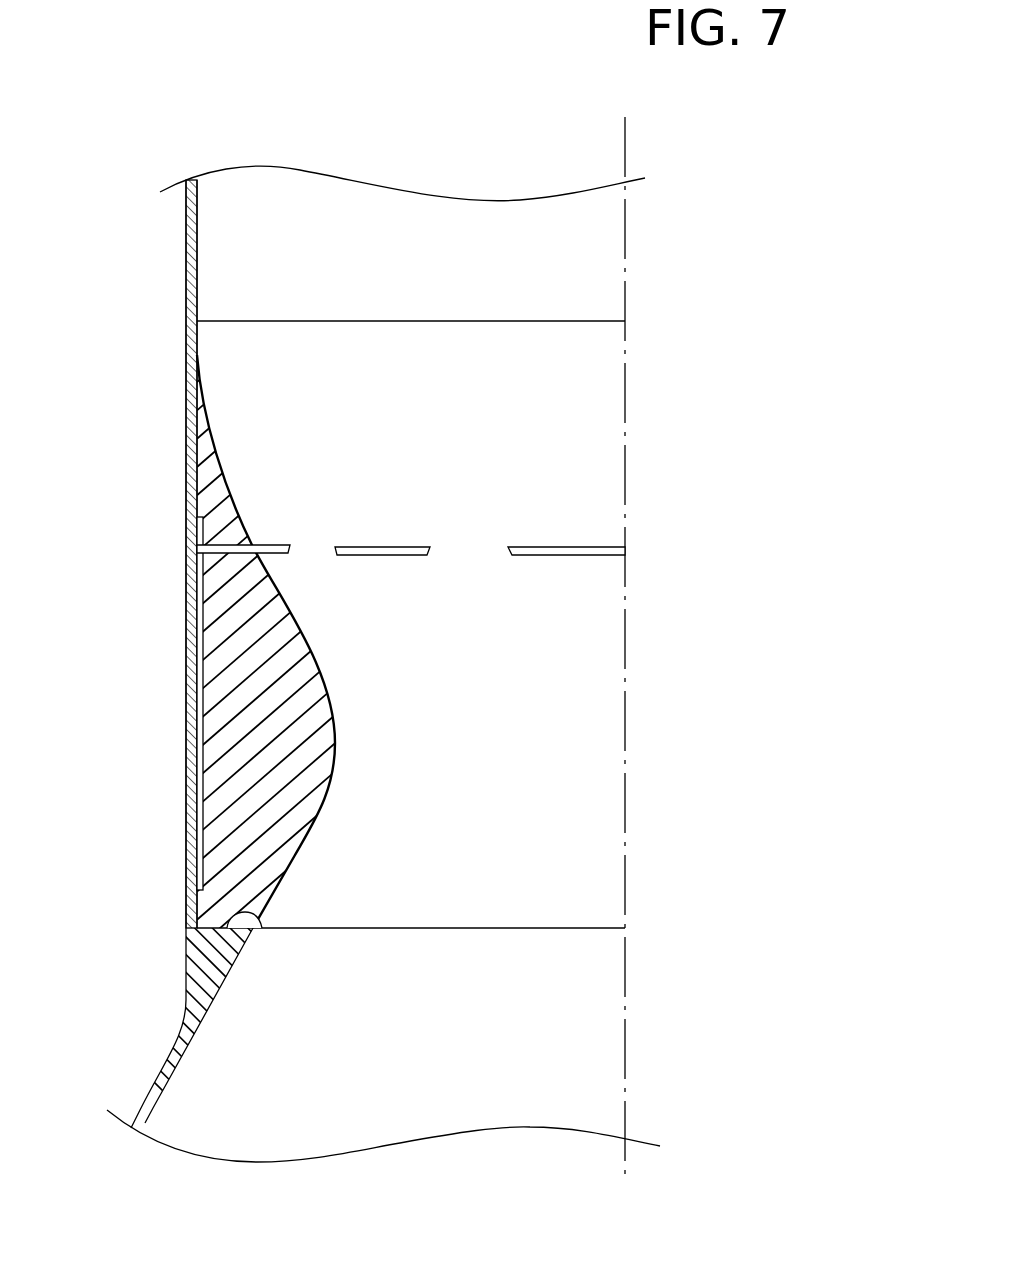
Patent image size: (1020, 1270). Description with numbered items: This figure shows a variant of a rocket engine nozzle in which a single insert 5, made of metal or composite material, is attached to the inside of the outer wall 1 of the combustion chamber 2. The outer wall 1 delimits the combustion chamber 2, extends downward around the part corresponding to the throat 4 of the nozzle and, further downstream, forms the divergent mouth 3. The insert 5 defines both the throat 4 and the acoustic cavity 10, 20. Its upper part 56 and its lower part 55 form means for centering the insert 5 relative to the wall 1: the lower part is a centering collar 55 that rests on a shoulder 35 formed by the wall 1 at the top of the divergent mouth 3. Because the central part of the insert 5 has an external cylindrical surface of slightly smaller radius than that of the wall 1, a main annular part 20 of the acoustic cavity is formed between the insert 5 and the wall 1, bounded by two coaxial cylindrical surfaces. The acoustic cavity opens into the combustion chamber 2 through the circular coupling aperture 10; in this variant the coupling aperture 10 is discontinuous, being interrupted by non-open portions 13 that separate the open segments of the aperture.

The outer wall 1 is at (186, 317).
The combustion chamber 2 is at (453, 262).
The divergent mouth 3 is at (160, 1085).
The throat 4 is at (338, 748).
The insert 5 is at (270, 828).
The coupling aperture 10 is at (538, 541).
The non-open portions 13 is at (313, 556).
The annular cavity 20 is at (193, 802).
The shoulder 35 is at (260, 912).
The centering collar 55 is at (228, 903).
The upper part of the insert 56 is at (205, 475).